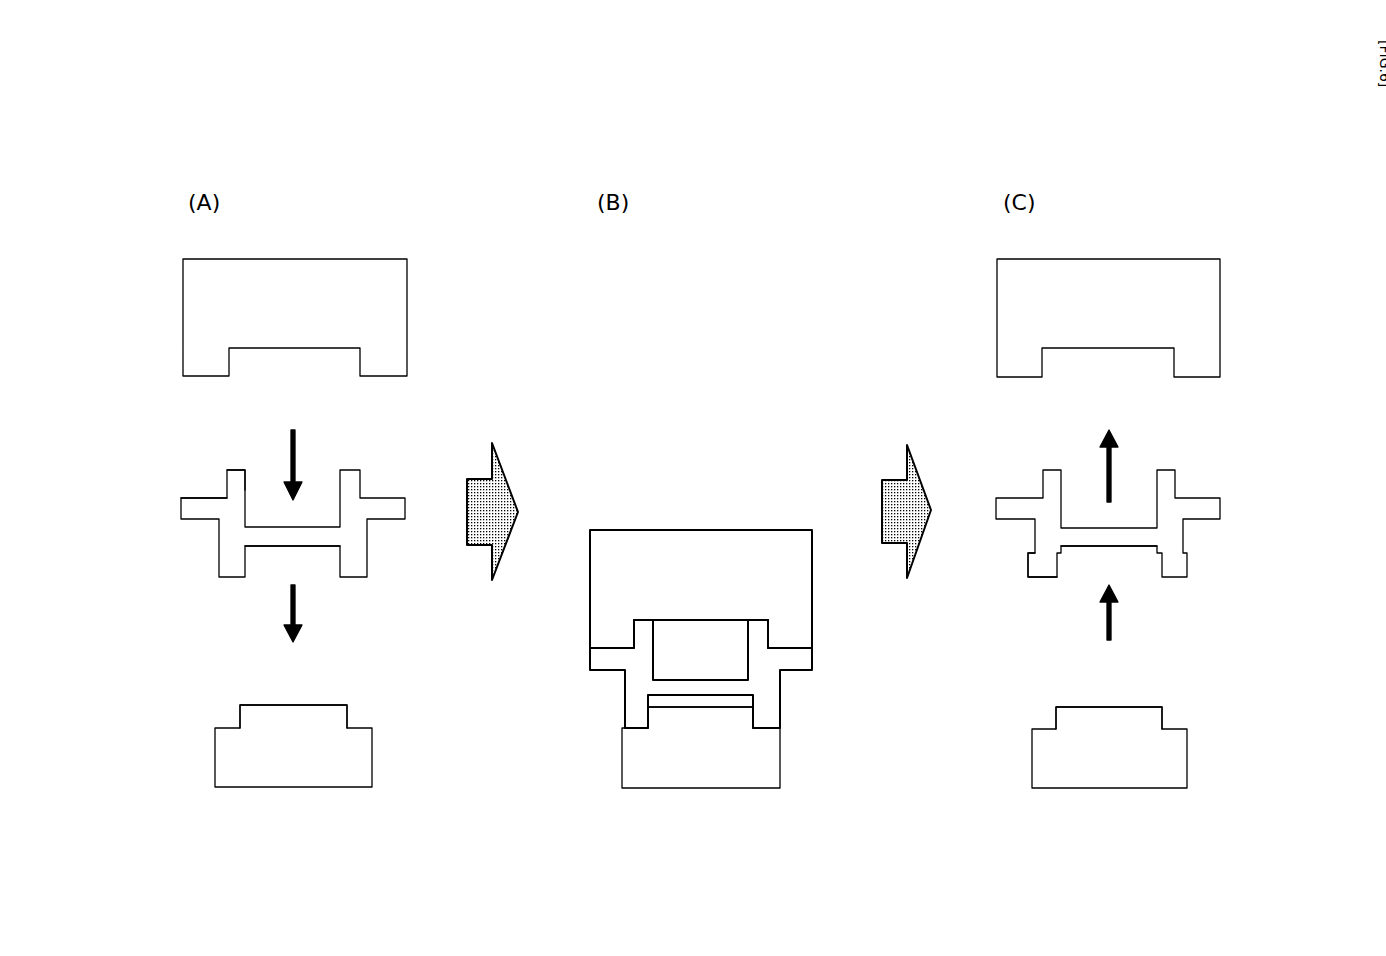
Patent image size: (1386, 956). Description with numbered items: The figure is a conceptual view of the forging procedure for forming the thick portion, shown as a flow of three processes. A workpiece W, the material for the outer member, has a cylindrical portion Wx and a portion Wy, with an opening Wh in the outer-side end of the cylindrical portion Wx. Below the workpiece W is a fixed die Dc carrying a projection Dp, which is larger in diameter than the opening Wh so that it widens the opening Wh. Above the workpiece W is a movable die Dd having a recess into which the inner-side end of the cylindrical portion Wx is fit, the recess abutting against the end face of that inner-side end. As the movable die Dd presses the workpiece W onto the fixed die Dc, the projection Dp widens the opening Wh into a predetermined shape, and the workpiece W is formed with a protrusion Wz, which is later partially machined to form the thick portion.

The movable die Dd is at (427, 263).
The fixed die Dc is at (393, 782).
The projection Dp is at (254, 705).
The workpiece W is at (405, 485).
The cylindrical portion Wx is at (235, 470).
The flange portion of workpiece Wy is at (198, 498).
The opening Wh is at (312, 575).
The protrusion Wz is at (1025, 568).